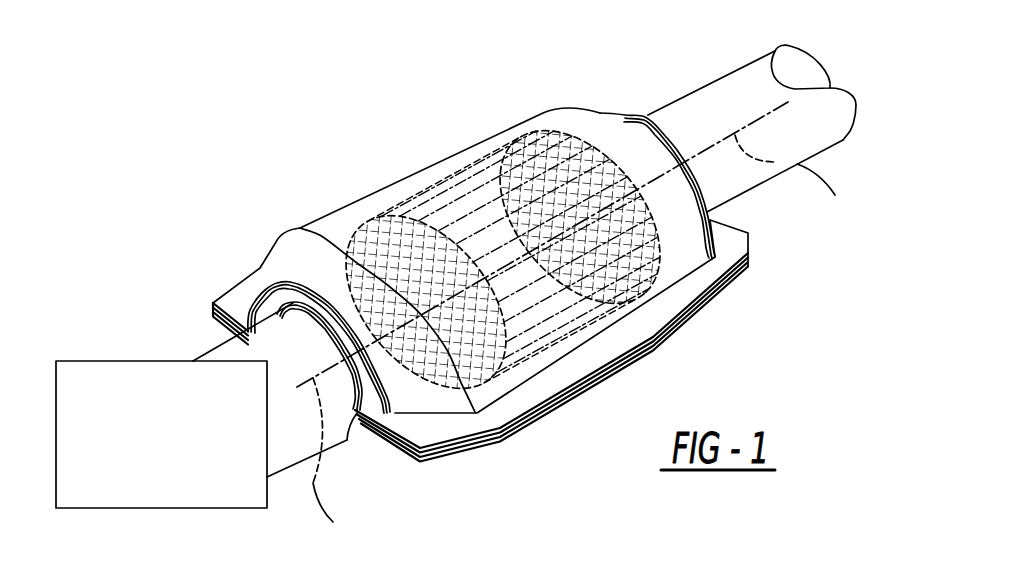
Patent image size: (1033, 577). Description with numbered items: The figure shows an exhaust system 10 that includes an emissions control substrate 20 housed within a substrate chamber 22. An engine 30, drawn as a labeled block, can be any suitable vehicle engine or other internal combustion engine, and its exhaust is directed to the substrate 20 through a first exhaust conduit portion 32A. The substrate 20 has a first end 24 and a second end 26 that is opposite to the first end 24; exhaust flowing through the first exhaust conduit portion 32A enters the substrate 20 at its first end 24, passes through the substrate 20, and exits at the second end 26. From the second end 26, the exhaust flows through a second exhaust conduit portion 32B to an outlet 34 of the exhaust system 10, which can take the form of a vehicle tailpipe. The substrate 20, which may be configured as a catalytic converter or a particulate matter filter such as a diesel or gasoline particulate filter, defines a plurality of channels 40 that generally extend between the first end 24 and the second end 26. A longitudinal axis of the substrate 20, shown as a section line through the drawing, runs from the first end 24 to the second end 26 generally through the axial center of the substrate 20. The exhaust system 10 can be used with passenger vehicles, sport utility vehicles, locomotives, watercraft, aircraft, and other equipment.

The exhaust system 10 is at (290, 143).
The emissions control substrate 20 is at (457, 167).
The substrate chamber 22 is at (571, 123).
The first end 24 is at (431, 377).
The second end 26 is at (653, 242).
The engine 30 is at (123, 361).
The first exhaust conduit portion 32A is at (260, 342).
The second exhaust conduit portion 32B is at (743, 92).
The outlet 34 is at (795, 68).
The channels 40 is at (567, 312).